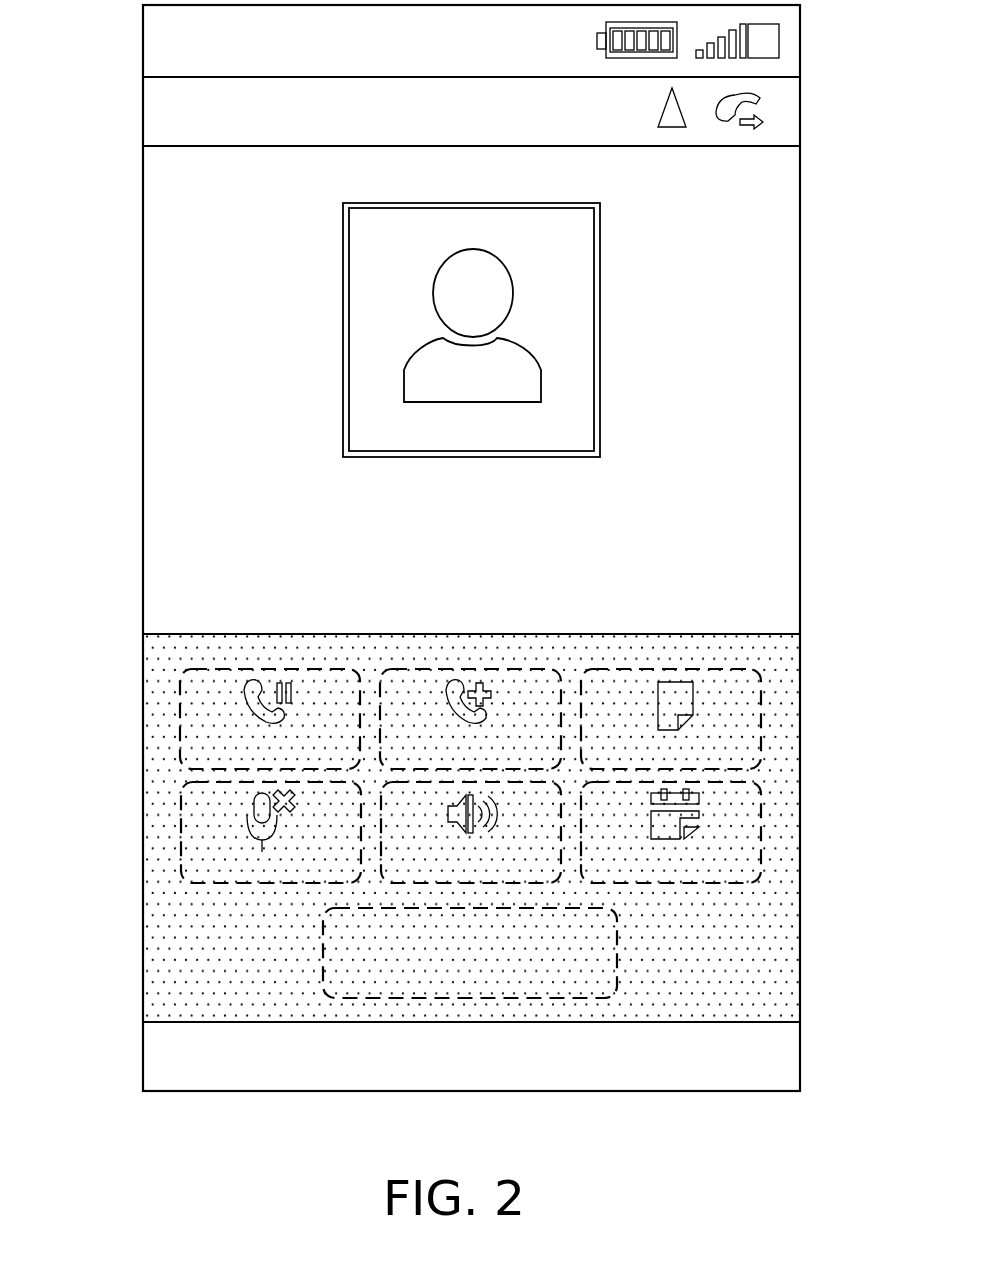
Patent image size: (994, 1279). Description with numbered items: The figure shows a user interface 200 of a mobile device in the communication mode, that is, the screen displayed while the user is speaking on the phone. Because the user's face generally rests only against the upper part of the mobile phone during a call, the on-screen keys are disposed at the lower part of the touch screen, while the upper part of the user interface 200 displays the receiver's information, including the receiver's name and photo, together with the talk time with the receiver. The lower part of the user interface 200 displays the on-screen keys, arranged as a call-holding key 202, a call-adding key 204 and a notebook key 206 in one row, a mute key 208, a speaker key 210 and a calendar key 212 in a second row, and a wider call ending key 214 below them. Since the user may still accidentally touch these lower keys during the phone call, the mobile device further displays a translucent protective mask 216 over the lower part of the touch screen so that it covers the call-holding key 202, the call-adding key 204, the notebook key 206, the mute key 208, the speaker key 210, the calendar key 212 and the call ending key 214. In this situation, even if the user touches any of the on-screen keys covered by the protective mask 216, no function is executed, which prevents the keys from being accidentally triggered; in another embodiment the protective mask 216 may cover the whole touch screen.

The user interface 200 is at (143, 378).
The call-holding key 202 is at (180, 710).
The call-adding key 204 is at (515, 668).
The notebook key 206 is at (762, 731).
The mute key 208 is at (180, 842).
The speaker key 210 is at (500, 883).
The calendar key 212 is at (762, 838).
The call ending key 214 is at (617, 960).
The translucent protective mask 216 is at (760, 654).